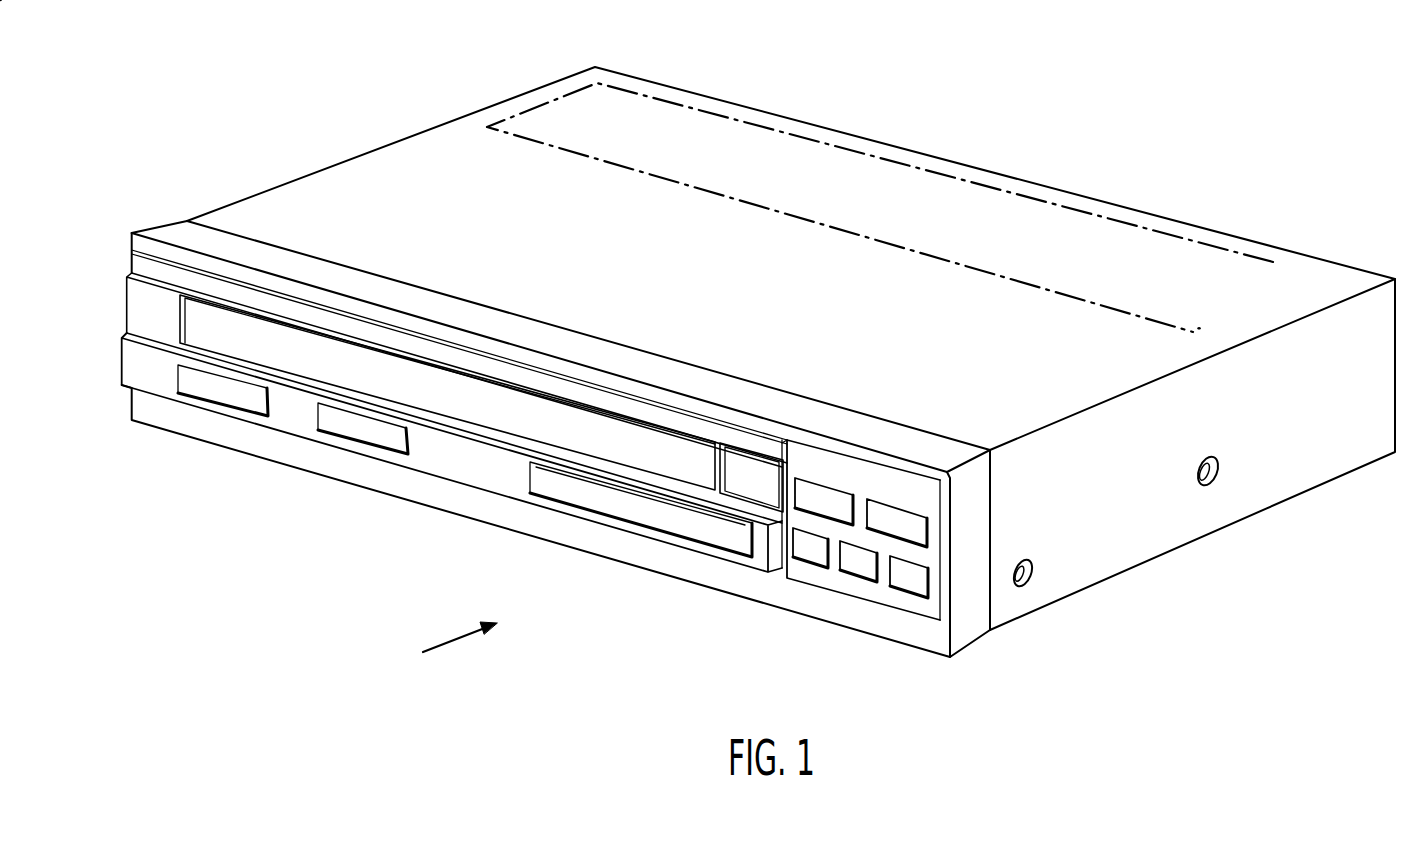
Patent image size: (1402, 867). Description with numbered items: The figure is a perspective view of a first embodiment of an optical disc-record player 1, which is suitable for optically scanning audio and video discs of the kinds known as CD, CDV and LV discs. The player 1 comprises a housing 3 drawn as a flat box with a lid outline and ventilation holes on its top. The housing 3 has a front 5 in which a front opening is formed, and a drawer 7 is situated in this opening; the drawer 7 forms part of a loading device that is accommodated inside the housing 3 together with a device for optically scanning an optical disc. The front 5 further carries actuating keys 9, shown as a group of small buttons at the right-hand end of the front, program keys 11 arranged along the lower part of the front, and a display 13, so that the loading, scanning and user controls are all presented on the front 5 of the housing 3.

The disc-record player 1 is at (462, 640).
The housing 3 is at (1177, 543).
The front 5 is at (437, 492).
The drawer 7 is at (302, 363).
The actuating keys 9 is at (852, 568).
The program keys 11 is at (355, 430).
The display 13 is at (632, 513).